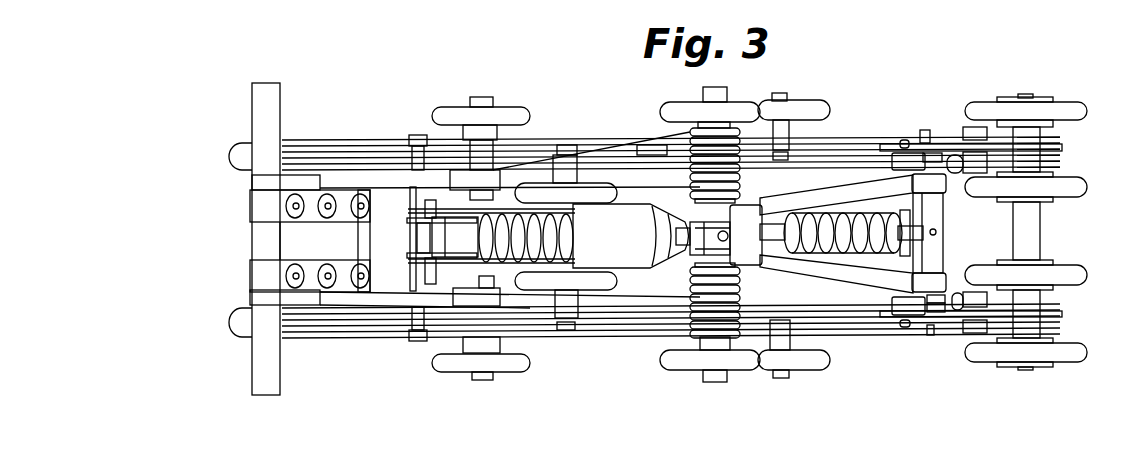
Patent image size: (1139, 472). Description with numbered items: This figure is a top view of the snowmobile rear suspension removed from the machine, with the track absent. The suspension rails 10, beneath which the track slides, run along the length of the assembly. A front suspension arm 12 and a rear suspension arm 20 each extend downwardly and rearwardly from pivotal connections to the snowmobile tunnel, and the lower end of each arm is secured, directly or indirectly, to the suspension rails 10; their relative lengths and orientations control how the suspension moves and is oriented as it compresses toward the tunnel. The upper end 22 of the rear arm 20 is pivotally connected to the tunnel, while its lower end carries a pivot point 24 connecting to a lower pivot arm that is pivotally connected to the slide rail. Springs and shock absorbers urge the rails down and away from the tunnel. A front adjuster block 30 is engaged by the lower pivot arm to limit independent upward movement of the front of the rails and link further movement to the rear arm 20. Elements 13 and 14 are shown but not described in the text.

The suspension rails 10 is at (863, 192).
The front suspension arm 12 is at (357, 173).
The front cross bar 13 is at (252, 295).
The shock absorber mounting plate 14 is at (500, 167).
The rear suspension arm 20 is at (853, 196).
The upper end of the rear arm 22 is at (713, 348).
The pivot point 24 is at (938, 254).
The front adjuster block 30 is at (907, 162).